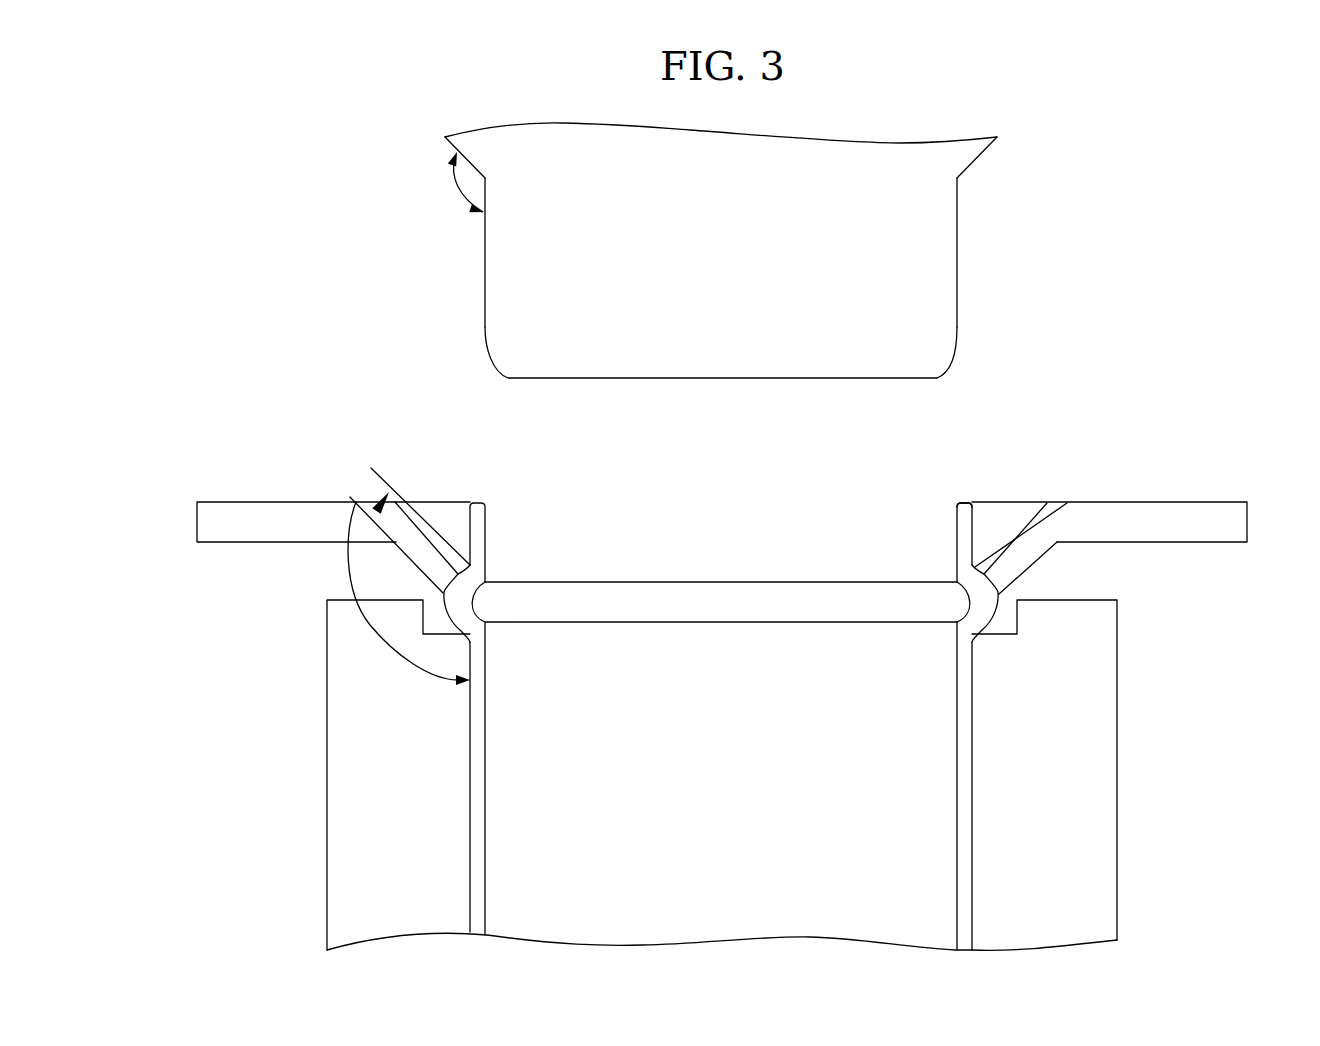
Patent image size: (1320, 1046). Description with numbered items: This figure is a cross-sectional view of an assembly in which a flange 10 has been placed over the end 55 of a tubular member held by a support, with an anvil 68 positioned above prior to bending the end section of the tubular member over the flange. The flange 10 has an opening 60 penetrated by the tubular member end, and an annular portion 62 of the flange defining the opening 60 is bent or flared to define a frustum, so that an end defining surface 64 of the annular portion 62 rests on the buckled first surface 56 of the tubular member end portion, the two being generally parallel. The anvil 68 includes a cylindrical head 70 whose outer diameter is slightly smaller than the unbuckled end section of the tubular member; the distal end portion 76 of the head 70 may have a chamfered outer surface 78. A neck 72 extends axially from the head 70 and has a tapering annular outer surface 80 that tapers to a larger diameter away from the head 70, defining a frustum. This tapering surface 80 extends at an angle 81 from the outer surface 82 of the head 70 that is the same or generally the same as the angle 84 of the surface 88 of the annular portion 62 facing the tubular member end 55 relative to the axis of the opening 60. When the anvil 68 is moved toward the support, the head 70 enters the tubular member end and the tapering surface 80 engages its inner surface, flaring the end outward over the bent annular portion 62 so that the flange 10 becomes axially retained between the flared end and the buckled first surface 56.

The flange 10 is at (1107, 530).
The tubular member end 55 is at (965, 502).
The buckled first surface 56 is at (992, 600).
The opening 60 is at (978, 598).
The annular portion 62 is at (400, 548).
The end defining surface 64 is at (352, 498).
The anvil 68 is at (1004, 224).
The head 70 is at (935, 274).
The neck 72 is at (962, 147).
The distal end portion 76 is at (535, 352).
The outer surface 78 is at (950, 345).
The tapering annular outer surface 80 is at (447, 142).
The angle 81 is at (450, 193).
The outer surface 82 is at (472, 207).
The angle 84 is at (378, 632).
The surface 88 is at (437, 530).